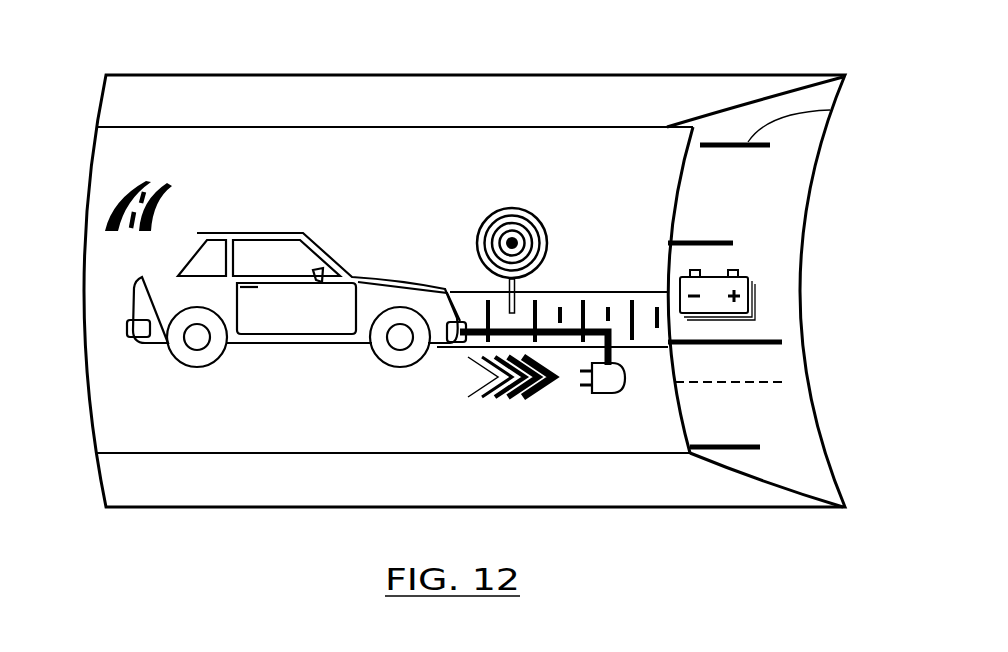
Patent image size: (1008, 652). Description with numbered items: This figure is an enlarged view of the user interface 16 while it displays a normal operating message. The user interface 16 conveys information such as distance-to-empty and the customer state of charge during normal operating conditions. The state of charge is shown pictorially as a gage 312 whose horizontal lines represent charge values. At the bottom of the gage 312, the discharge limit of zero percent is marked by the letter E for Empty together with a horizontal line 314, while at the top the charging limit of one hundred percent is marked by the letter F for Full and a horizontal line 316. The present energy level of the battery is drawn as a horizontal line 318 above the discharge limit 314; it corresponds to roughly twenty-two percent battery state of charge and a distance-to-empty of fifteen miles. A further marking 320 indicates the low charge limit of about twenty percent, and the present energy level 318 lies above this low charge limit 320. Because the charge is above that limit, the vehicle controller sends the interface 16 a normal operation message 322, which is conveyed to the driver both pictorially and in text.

The user interface 16 is at (746, 74).
The gage 312 is at (804, 243).
The charging limit line 316 is at (830, 110).
The present energy level line 318 is at (763, 341).
The low charge limit 320 is at (766, 381).
The discharge limit line 314 is at (727, 453).
The normal operation message 322 is at (150, 256).